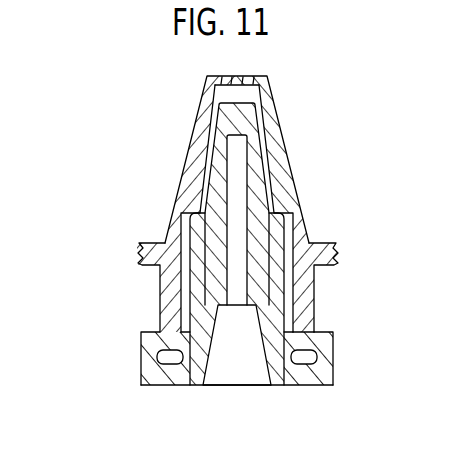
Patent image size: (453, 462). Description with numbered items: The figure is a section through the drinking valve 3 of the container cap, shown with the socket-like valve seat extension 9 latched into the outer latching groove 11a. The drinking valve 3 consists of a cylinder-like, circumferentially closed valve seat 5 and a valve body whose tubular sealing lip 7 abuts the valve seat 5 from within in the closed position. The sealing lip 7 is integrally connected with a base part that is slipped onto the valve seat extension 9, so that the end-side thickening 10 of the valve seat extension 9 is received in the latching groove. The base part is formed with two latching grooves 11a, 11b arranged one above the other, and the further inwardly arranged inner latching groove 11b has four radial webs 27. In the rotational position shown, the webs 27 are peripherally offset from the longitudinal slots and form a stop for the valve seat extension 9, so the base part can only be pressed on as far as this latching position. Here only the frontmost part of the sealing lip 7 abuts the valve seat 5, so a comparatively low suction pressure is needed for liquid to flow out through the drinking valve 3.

The drinking valve 3 is at (177, 218).
The valve seat 5 is at (307, 212).
The sealing lip 7 is at (272, 262).
The valve seat extension 9 is at (177, 303).
The end-side thickening 10 is at (303, 332).
The outer latching groove 11a is at (143, 335).
The inner latching groove 11b is at (141, 370).
The radial webs 27 is at (332, 368).